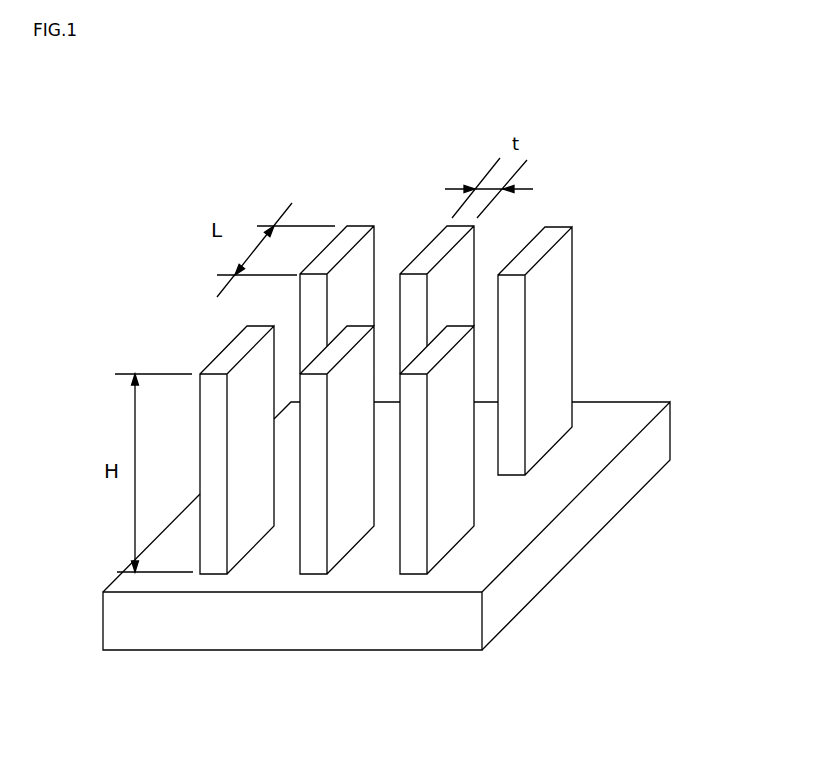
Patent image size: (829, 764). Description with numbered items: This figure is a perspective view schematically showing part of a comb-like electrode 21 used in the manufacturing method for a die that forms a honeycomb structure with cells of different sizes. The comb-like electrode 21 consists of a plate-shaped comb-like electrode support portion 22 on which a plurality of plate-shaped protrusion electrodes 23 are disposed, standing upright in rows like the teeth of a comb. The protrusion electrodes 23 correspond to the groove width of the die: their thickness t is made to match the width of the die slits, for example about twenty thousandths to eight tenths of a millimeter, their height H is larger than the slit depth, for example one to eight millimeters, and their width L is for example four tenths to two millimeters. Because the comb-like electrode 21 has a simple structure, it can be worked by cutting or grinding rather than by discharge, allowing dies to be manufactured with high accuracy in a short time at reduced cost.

The comb-like electrode 21 is at (617, 80).
The comb-like electrode support portion 22 is at (657, 442).
The protrusion electrode 23 is at (553, 312).